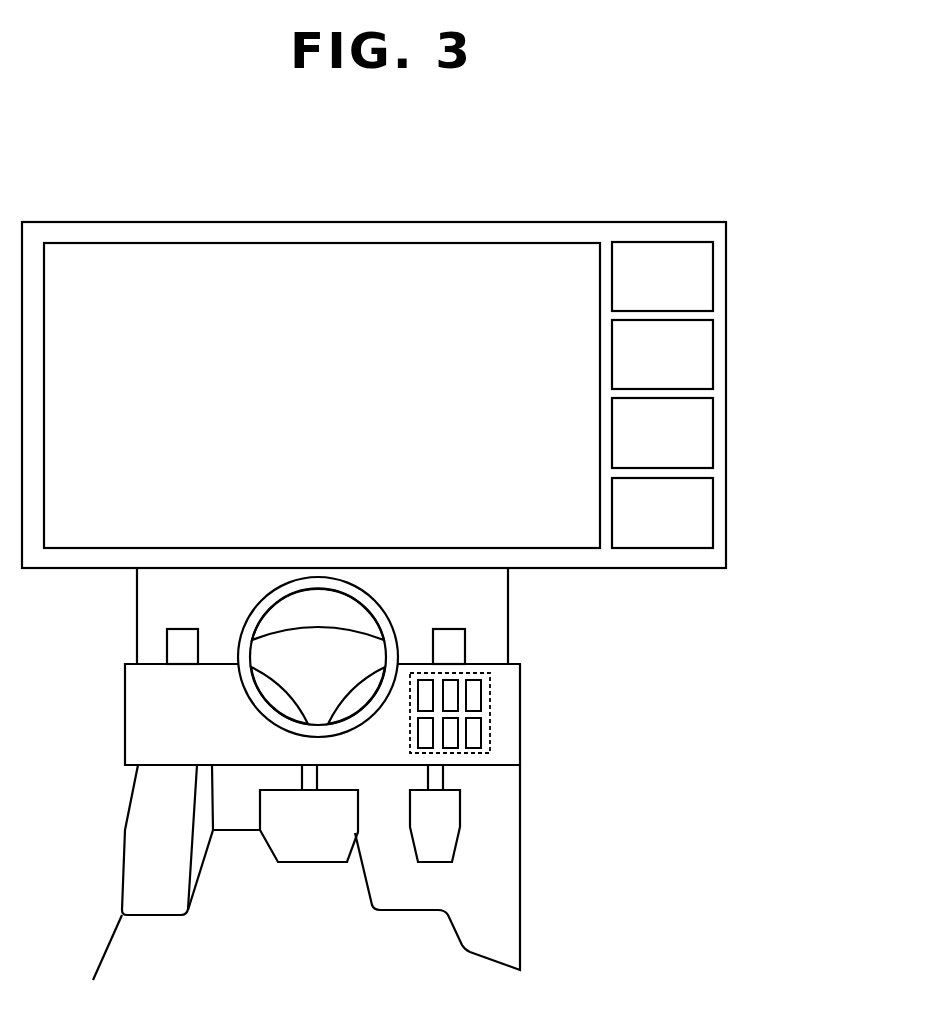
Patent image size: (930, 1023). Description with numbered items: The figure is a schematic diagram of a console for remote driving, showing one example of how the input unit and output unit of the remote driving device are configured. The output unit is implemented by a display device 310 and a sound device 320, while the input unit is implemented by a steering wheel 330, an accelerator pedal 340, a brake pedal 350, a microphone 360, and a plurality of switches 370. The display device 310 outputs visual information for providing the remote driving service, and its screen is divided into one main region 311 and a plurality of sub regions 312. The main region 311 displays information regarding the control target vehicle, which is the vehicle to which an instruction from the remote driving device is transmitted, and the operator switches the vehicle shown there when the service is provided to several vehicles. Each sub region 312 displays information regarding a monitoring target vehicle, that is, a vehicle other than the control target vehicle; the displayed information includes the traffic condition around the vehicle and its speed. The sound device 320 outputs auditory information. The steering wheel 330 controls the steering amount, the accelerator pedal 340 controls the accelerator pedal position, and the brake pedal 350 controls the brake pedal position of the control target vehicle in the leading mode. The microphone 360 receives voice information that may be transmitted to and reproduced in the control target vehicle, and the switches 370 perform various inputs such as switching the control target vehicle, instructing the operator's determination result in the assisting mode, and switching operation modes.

The display device 310 is at (382, 222).
The main region 311 is at (207, 243).
The sub regions 312 is at (713, 282).
The sound device 320 is at (450, 647).
The steering wheel 330 is at (240, 686).
The accelerator pedal 340 is at (437, 840).
The brake pedal 350 is at (315, 830).
The microphone 360 is at (185, 647).
The plurality of switches 370 is at (492, 708).